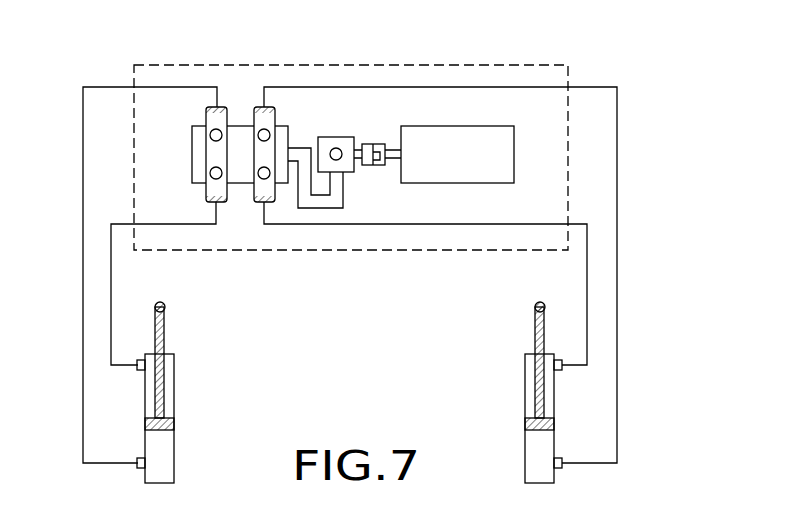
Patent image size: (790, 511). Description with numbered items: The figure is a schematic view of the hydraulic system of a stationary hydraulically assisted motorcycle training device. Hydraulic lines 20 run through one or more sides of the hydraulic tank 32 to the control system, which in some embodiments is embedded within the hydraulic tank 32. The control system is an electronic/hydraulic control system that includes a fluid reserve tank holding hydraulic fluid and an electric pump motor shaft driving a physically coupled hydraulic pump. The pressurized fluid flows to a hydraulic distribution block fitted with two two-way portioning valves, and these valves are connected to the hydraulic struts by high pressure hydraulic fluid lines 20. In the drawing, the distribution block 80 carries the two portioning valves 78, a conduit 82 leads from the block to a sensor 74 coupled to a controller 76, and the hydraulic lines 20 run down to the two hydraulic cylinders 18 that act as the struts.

The hydraulic cylinder 18 is at (174, 405).
The hydraulic lines 20 is at (83, 200).
The hydraulic tank 32 is at (510, 65).
The pressure sensor 74 is at (336, 137).
The controller 76 is at (457, 126).
The valve 78 is at (216, 107).
The valve block 80 is at (238, 183).
The hydraulic conduit 82 is at (320, 208).